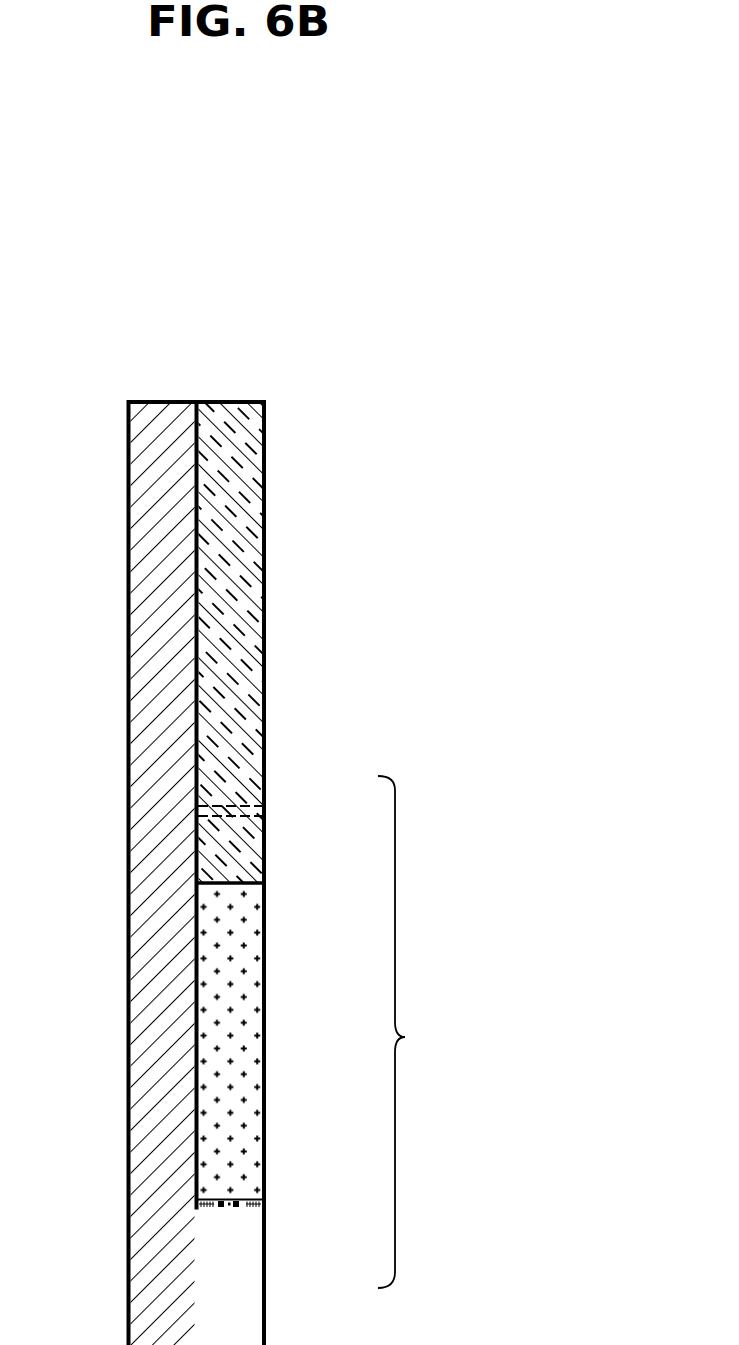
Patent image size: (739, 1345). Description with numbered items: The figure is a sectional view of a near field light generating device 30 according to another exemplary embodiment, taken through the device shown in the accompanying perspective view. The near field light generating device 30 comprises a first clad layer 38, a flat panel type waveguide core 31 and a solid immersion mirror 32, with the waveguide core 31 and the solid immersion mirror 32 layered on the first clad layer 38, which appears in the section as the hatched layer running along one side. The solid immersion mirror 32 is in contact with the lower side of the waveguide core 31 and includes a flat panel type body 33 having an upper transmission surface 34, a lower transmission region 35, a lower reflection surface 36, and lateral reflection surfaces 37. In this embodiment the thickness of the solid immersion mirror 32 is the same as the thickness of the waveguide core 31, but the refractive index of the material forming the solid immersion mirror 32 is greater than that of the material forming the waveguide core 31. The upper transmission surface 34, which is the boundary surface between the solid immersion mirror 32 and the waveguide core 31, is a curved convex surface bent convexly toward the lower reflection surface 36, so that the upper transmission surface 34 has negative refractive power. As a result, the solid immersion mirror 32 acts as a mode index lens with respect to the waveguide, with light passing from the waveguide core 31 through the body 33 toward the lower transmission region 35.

The near field light generating device 30 is at (488, 393).
The waveguide core 31 is at (243, 722).
The solid immersion mirror 32 is at (415, 1032).
The flat panel type body 33 is at (253, 1059).
The upper transmission surface 34 is at (262, 864).
The lower transmission region 35 is at (234, 1212).
The lower reflection surface 36 is at (265, 1203).
The lateral reflection surfaces 37 is at (260, 798).
The first clad layer 38 is at (142, 752).